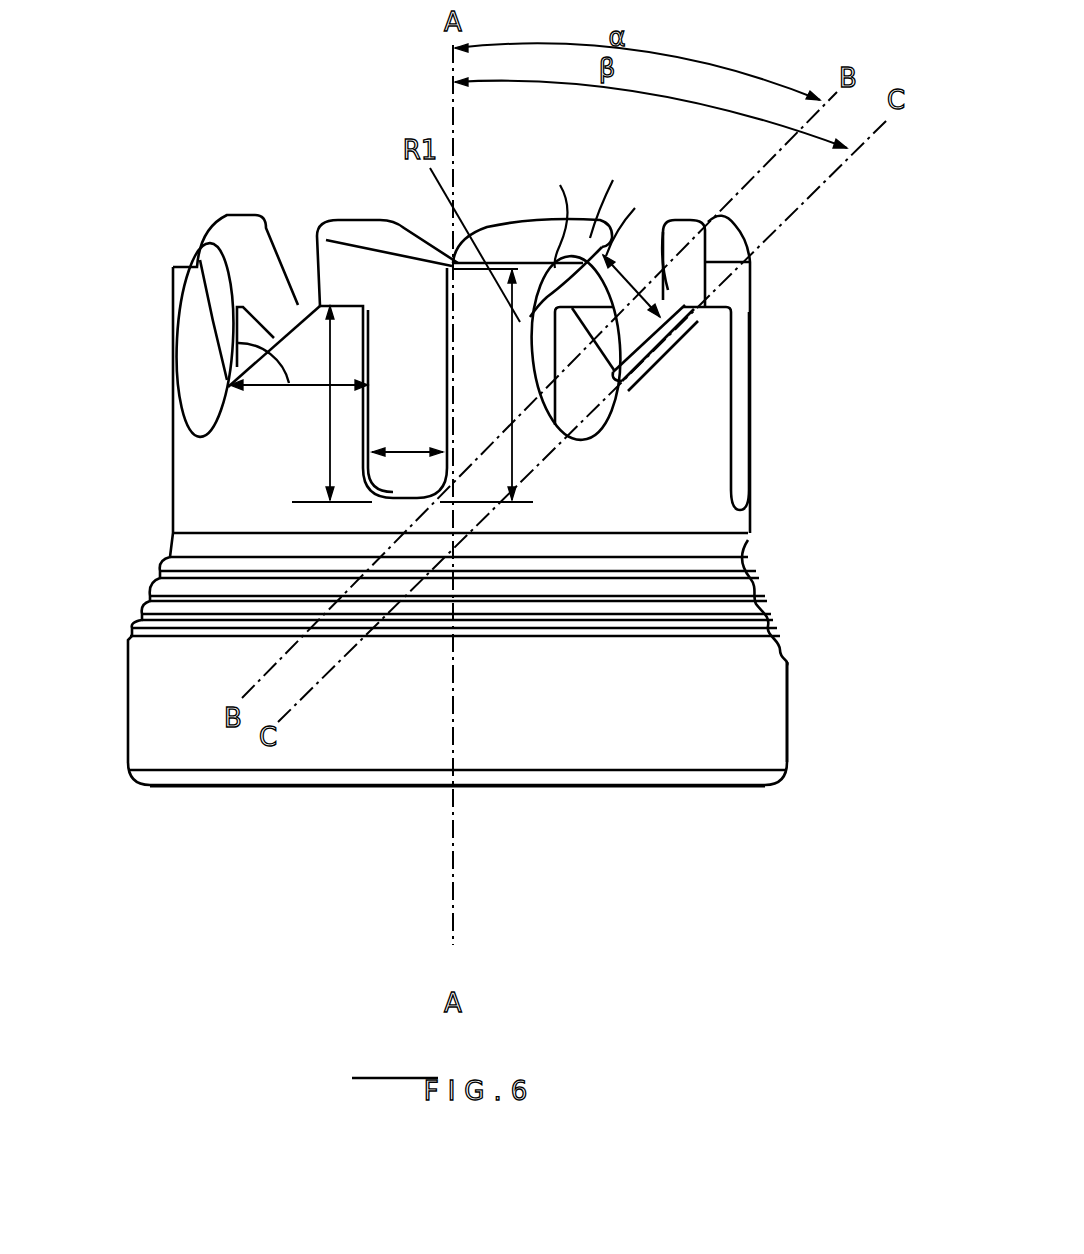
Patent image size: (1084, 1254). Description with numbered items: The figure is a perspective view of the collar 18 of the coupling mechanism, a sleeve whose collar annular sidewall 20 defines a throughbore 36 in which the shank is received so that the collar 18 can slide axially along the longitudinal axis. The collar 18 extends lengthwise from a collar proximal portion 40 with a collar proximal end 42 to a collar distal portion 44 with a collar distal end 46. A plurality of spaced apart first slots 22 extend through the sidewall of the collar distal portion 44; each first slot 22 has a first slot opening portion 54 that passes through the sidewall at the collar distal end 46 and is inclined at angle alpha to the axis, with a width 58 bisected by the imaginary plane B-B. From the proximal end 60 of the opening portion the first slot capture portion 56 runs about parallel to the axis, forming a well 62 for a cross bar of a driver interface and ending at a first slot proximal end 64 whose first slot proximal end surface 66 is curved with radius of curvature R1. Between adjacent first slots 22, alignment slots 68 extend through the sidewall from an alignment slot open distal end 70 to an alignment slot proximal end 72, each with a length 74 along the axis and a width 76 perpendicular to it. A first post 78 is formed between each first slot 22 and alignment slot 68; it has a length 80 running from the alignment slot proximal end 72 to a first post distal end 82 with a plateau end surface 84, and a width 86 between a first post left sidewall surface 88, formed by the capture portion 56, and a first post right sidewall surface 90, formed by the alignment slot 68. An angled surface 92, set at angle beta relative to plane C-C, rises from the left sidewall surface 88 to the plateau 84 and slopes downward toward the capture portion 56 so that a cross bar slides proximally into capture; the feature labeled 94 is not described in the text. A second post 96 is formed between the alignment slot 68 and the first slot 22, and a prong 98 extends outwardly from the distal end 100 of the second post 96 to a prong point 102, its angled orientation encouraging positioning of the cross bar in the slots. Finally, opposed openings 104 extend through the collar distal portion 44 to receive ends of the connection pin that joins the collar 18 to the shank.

The collar 18 is at (225, 126).
The collar annular sidewall 20 is at (713, 440).
The first slot 22 is at (243, 295).
The throughbore 36 is at (612, 806).
The collar proximal portion 40 is at (750, 713).
The collar proximal end 42 is at (392, 792).
The collar distal portion 44 is at (198, 510).
The collar distal end 46 is at (613, 192).
The first slot opening portion 54 is at (717, 217).
The first slot capture portion 56 is at (227, 388).
The width 58 is at (608, 262).
The proximal end of the first slot opening portion 60 is at (748, 178).
The well 62 is at (605, 412).
The first slot proximal end 64 is at (588, 442).
The first slot proximal end surface 66 is at (585, 427).
The alignment slot 68 is at (400, 500).
The alignment slot open distal end 70 is at (403, 383).
The alignment slot proximal end 72 is at (406, 503).
The length 74 is at (422, 384).
The width 76 is at (383, 438).
The first post 78 is at (228, 385).
The length 80 is at (342, 300).
The first post distal end 82 is at (298, 302).
The plateau end surface 84 is at (340, 291).
The width 86 is at (238, 341).
The first post left sidewall surface 88 is at (660, 393).
The first post right sidewall surface 90 is at (372, 362).
The angled surface 92 is at (297, 302).
The corner 94 is at (726, 291).
The second post 96 is at (249, 422).
The prong 98 is at (582, 222).
The distal end of the second post 100 is at (557, 209).
The prong point 102 is at (638, 215).
The opening 104 is at (777, 633).